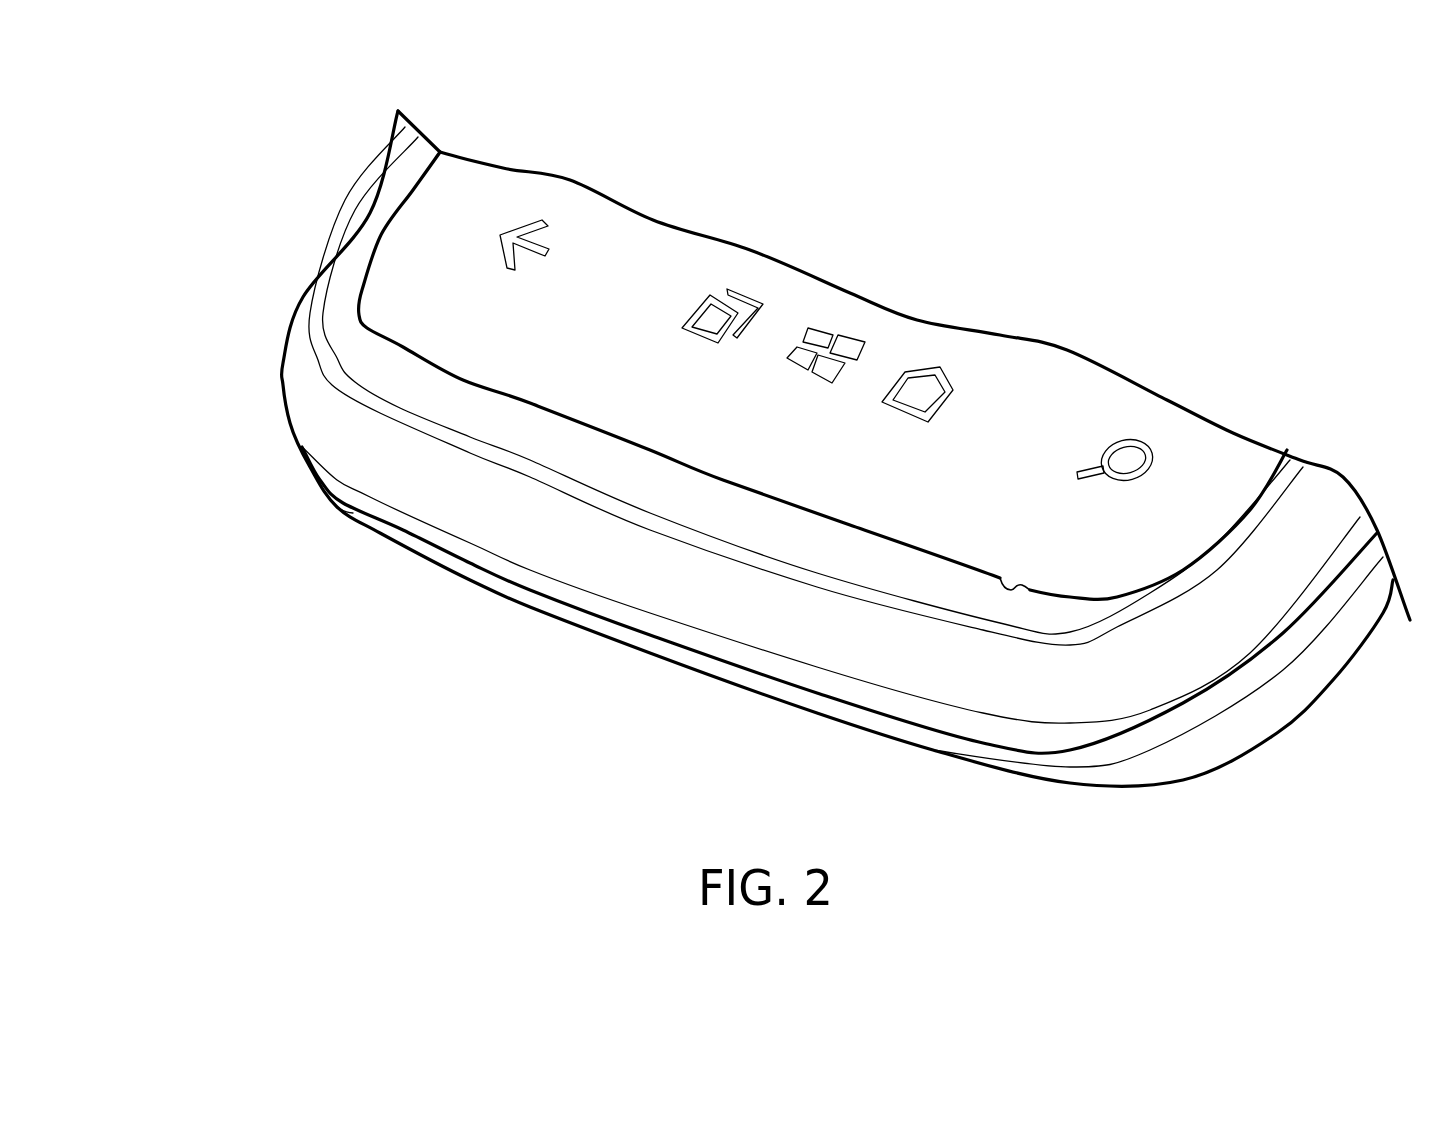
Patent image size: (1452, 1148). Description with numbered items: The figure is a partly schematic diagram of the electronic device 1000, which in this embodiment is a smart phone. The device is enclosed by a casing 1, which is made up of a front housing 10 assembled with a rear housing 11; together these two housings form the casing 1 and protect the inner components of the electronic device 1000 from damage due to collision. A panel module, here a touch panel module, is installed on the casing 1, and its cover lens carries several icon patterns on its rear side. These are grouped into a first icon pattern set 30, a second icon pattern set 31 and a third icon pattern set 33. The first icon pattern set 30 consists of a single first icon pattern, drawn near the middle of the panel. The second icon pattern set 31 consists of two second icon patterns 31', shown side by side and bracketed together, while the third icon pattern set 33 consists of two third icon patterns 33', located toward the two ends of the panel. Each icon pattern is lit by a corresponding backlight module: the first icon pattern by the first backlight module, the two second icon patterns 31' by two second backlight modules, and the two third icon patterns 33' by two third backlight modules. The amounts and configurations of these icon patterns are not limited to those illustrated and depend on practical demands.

The electronic device 1000 is at (1240, 242).
The casing 1 is at (185, 389).
The front housing 10 is at (317, 418).
The rear housing 11 is at (330, 505).
The first icon pattern set 30 is at (843, 342).
The second icon pattern set 31 is at (594, 706).
The second icon pattern 31' is at (730, 518).
The third icon pattern set 33 is at (927, 140).
The third icon pattern 33' is at (828, 300).